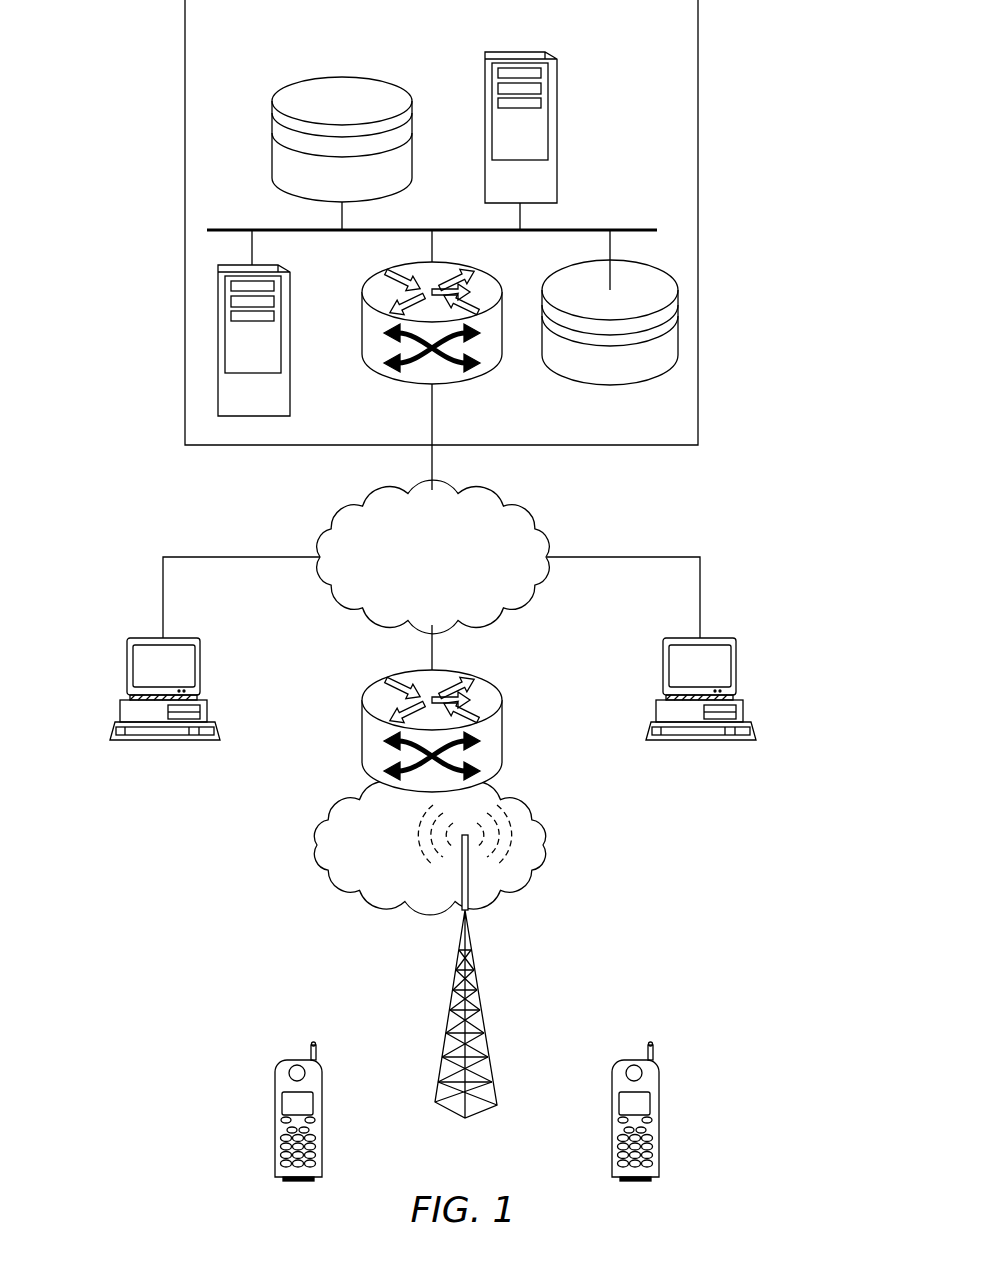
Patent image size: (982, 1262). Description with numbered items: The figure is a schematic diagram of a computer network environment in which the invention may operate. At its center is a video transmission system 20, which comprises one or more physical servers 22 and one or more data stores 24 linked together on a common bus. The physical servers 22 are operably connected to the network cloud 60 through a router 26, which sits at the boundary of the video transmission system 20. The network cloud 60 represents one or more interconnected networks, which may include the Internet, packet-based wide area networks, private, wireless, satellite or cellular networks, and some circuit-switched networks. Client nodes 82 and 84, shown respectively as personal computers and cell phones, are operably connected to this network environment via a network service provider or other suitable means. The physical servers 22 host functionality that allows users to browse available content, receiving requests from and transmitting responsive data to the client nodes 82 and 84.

The video transmission system 20 is at (619, 83).
The physical servers 22 is at (557, 128).
The data stores 24 is at (272, 150).
The router 26 is at (362, 330).
The network cloud 60 is at (338, 636).
The client nodes 82 is at (122, 668).
The client nodes 84 is at (275, 1135).